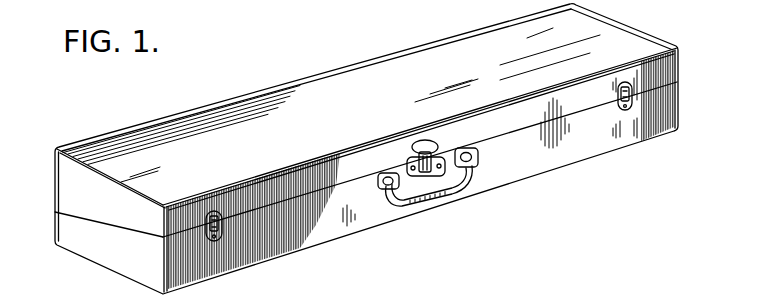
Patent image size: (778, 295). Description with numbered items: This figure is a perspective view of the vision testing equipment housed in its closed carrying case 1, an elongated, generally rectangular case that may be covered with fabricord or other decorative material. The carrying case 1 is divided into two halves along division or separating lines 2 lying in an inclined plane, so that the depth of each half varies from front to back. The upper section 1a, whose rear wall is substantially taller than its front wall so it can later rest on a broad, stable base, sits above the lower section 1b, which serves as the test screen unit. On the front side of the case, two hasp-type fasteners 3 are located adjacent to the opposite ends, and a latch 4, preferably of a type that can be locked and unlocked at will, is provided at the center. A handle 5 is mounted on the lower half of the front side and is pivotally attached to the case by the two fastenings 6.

The carrying case 1 is at (56, 223).
The upper section 1a is at (675, 59).
The lower section 1b is at (675, 107).
The separating lines 2 is at (99, 224).
The fasteners 3 is at (223, 223).
The latch 4 is at (436, 155).
The handle 5 is at (443, 196).
The fastenings 6 is at (376, 182).